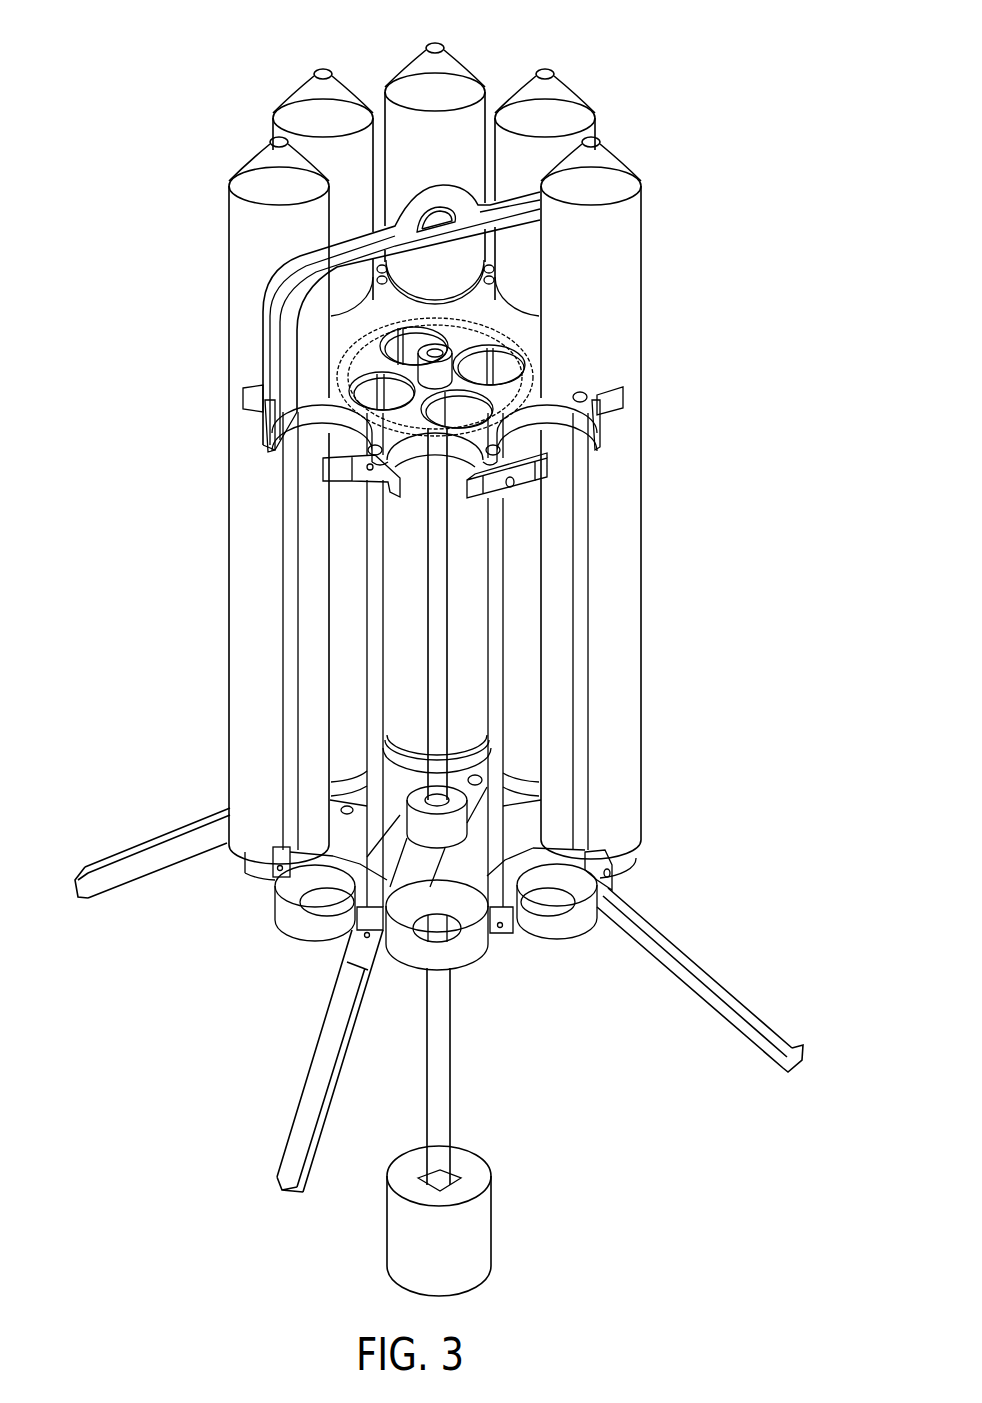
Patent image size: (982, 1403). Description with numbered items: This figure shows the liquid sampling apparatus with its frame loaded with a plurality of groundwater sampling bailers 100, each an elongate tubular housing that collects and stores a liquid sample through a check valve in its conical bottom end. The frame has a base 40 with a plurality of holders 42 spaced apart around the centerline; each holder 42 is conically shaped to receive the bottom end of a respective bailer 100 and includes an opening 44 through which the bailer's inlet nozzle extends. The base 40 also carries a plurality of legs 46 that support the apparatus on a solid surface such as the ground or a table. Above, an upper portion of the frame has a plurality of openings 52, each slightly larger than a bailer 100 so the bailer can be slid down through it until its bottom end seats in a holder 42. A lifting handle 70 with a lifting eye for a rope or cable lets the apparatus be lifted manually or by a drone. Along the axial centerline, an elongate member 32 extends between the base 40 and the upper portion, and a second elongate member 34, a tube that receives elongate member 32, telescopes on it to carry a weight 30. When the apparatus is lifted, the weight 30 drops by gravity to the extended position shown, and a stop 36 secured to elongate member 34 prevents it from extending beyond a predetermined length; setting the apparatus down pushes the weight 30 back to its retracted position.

The groundwater sampling bailer 100 is at (293, 100).
The lifting handle 70 is at (298, 294).
The opening 52 is at (250, 400).
The elongate member 32 is at (437, 543).
The stop 36 is at (437, 832).
The holder 42 is at (245, 850).
The opening 44 is at (333, 892).
The leg 46 is at (120, 857).
The elongate member 34 is at (442, 1060).
The weight 30 is at (480, 1222).
The base 40 is at (672, 878).